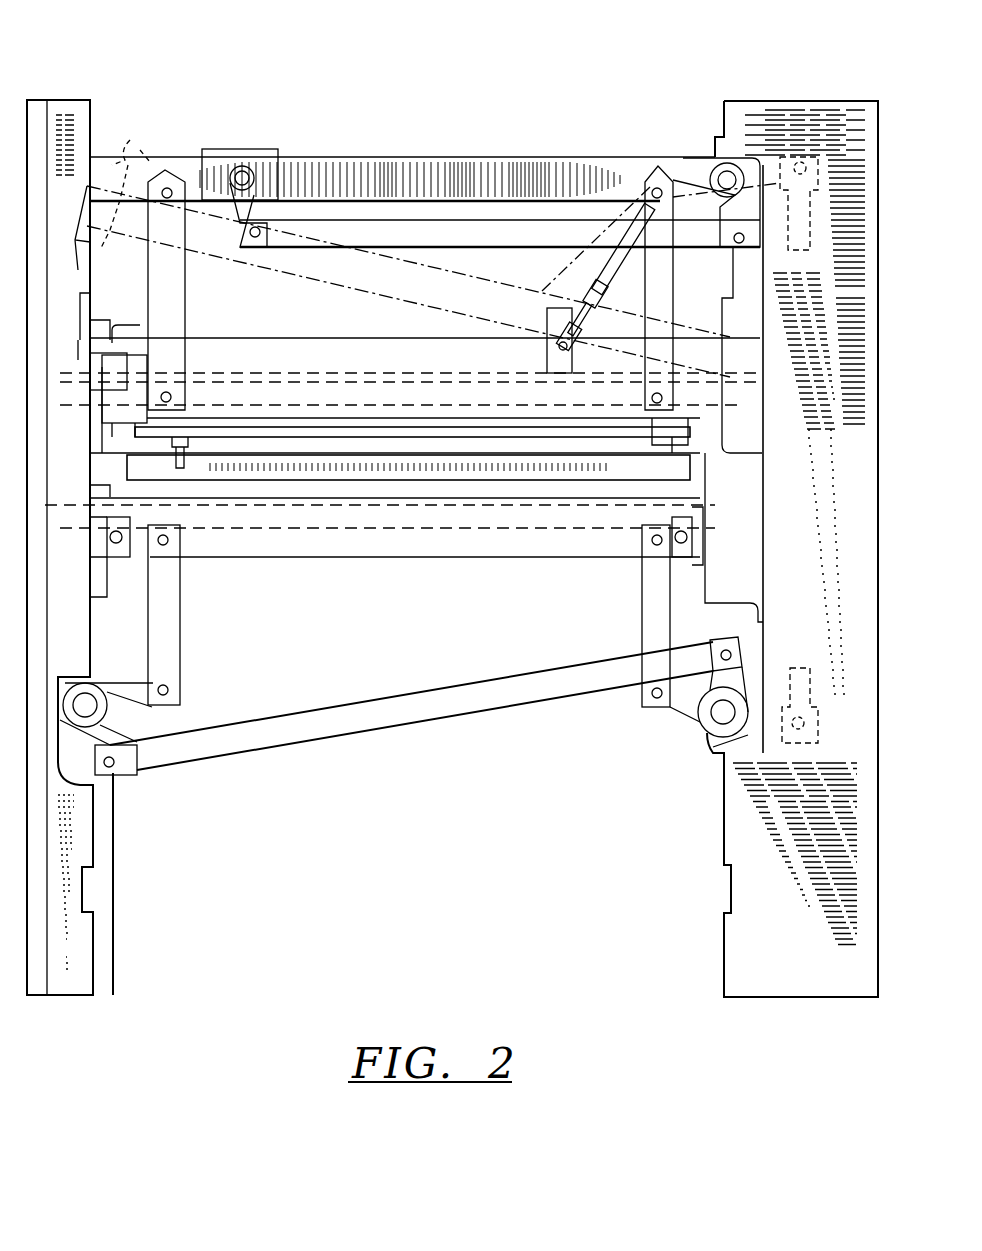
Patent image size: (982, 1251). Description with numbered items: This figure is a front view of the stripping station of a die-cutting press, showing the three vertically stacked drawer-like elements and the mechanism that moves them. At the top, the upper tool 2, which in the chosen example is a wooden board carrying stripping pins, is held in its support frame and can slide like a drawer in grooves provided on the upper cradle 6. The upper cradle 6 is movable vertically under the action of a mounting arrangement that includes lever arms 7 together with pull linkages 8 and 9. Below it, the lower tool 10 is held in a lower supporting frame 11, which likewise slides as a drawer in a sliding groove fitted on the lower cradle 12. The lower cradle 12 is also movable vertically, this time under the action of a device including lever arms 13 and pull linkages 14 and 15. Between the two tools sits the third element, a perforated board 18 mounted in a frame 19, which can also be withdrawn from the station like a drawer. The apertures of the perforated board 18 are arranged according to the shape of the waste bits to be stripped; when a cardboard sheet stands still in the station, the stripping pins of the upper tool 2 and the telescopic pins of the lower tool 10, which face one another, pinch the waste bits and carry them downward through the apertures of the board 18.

The upper tool 2 is at (392, 381).
The upper cradle 6 is at (282, 393).
The lever arms 7 is at (257, 212).
The pull linkage 8 is at (163, 303).
The pull linkage 9 is at (532, 237).
The lower tool 10 is at (372, 574).
The lower supporting frame 11 is at (530, 515).
The lower cradle 12 is at (463, 538).
The lever arms 13 is at (110, 742).
The pull linkage 14 is at (237, 740).
The pull linkage 15 is at (153, 635).
The perforated board 18 is at (322, 437).
The frame 19 is at (447, 467).